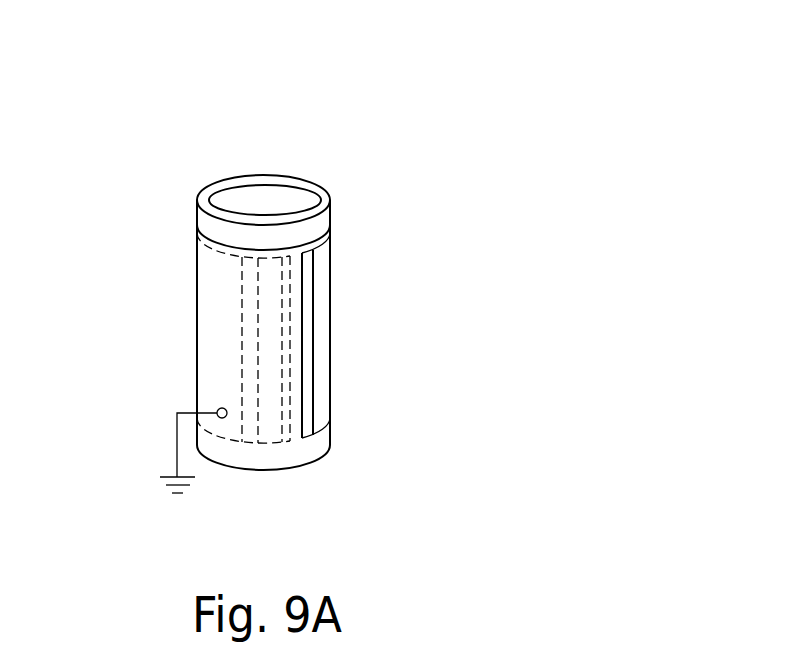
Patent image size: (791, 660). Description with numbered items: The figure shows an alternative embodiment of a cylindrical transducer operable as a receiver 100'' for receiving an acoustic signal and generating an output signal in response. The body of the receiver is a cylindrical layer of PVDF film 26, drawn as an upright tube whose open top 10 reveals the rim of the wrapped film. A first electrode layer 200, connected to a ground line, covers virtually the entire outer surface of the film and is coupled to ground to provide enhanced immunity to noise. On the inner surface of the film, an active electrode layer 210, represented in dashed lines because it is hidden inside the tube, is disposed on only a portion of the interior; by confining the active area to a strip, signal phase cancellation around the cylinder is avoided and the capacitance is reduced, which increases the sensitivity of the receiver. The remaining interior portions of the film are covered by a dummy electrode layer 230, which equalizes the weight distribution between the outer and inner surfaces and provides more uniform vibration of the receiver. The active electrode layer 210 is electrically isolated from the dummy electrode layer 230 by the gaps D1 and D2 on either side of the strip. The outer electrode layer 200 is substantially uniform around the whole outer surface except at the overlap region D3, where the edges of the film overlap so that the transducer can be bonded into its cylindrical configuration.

The receiver 100'' is at (349, 292).
The discharge opening 10 is at (250, 198).
The first electrode layer 200 is at (197, 222).
The PVDF film 26 is at (188, 342).
The active electrode layer 210 is at (270, 272).
The dummy electrode layer 230 is at (207, 289).
The gap D1 is at (250, 435).
The gap D2 is at (287, 435).
The overlap region D3 is at (323, 430).